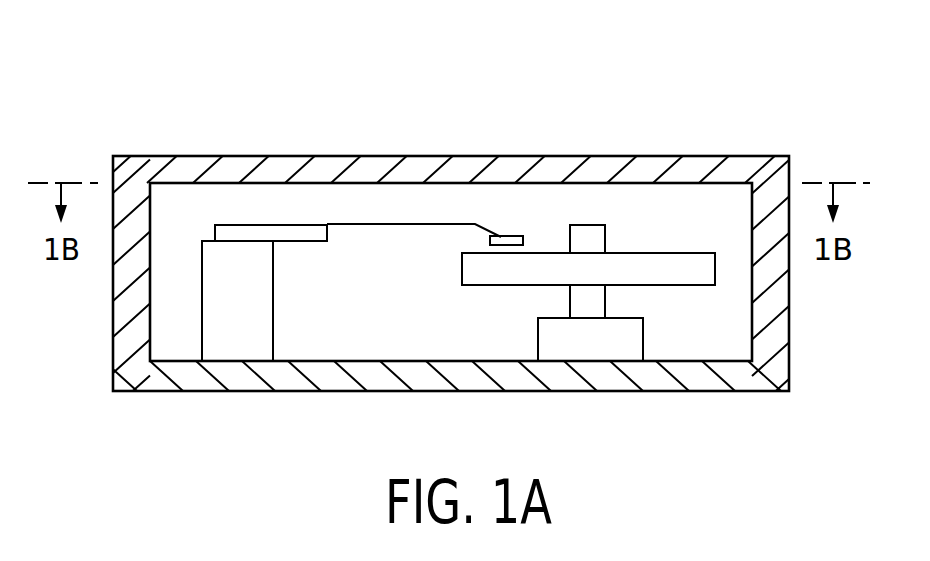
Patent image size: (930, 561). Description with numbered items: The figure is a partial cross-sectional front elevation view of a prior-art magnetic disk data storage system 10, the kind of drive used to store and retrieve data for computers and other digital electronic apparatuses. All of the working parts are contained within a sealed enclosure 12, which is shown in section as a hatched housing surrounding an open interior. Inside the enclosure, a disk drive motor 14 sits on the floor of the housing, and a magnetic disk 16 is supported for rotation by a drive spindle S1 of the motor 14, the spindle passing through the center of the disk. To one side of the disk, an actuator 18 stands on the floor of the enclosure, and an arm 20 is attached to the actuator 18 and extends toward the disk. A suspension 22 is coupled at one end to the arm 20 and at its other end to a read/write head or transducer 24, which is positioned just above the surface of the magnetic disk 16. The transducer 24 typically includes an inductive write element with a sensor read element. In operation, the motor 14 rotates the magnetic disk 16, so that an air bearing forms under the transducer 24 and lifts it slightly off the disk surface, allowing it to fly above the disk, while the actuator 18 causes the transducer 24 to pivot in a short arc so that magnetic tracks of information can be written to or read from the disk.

The magnetic disk data storage system 10 is at (678, 98).
The sealed enclosure 12 is at (497, 383).
The disk drive motor 14 is at (608, 349).
The magnetic disk 16 is at (663, 258).
The drive spindle S1 is at (593, 236).
The actuator 18 is at (258, 322).
The arm 20 is at (295, 232).
The suspension 22 is at (421, 228).
The read/write head or transducer 24 is at (505, 237).